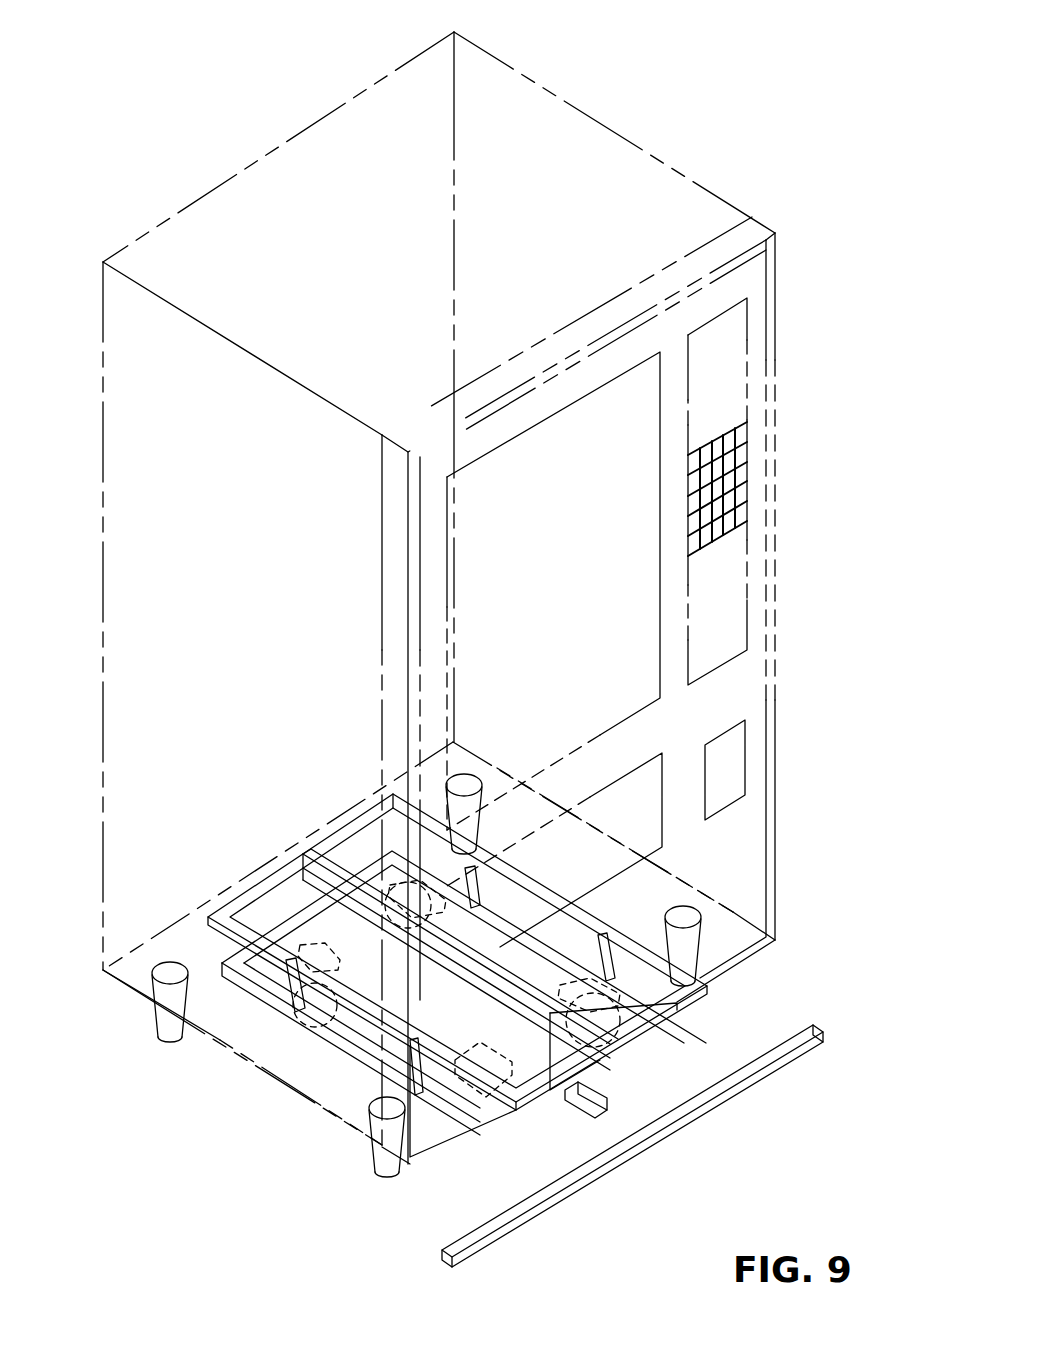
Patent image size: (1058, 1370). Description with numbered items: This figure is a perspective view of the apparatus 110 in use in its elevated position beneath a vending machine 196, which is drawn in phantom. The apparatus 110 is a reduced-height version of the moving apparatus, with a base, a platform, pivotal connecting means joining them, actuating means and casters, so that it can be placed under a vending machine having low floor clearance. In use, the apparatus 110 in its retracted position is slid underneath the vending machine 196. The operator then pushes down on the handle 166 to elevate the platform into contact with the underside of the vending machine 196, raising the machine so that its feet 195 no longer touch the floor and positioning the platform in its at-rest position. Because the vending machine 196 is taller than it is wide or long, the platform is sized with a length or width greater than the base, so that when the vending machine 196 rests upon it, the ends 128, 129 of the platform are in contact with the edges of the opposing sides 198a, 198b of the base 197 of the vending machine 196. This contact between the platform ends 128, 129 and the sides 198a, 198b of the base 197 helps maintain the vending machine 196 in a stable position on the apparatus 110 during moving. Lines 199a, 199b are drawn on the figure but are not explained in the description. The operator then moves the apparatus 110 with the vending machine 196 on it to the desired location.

The vending machine 196 is at (648, 113).
The apparatus 110 is at (348, 778).
The end of platform 129 is at (272, 882).
The end of platform 128 is at (516, 1110).
The side of base 198a is at (437, 1140).
The side of base 198b is at (292, 845).
The phantom line 199a is at (273, 1070).
The phantom line 199b is at (713, 900).
The feet 195 is at (163, 1030).
The base of vending machine 197 is at (120, 985).
The handle 166 is at (570, 1190).